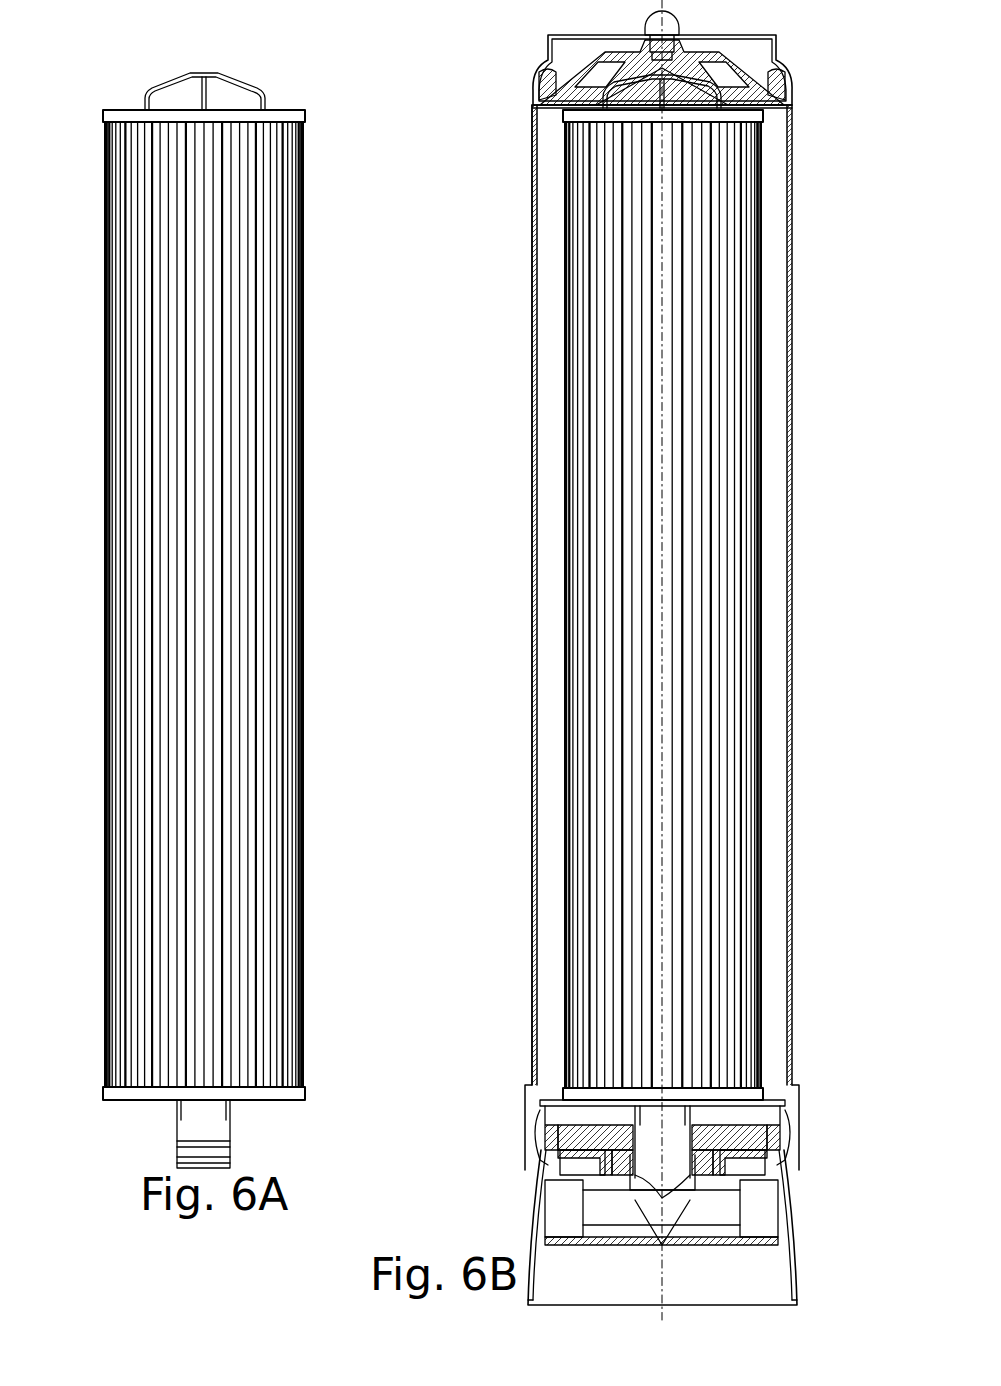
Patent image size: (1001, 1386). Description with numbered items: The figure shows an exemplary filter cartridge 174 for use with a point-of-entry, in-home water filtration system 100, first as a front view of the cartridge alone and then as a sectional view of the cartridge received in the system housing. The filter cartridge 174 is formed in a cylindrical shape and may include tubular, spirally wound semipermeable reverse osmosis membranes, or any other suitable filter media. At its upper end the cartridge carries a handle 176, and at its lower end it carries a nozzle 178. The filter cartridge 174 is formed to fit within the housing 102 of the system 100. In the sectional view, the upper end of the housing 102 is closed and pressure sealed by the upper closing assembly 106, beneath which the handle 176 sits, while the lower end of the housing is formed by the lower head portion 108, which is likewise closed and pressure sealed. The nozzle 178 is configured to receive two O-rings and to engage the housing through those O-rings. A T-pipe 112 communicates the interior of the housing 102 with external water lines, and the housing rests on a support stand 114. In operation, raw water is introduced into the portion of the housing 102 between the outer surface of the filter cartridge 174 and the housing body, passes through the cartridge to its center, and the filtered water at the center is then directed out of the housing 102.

In FIG. 6B, the water filtration system 100 is at (520, 62).
In FIG. 6B, the housing 102 is at (533, 190).
In FIG. 6B, the upper closing assembly 106 is at (753, 30).
In FIG. 6B, the lower head portion 108 is at (541, 1170).
In FIG. 6B, the T-pipe 112 is at (631, 1246).
In FIG. 6B, the support stand 114 is at (768, 1278).
In FIG. 6A, the filter cartridge 174 is at (96, 258).
In FIG. 6B, the filter cartridge 174 is at (605, 288).
In FIG. 6A, the handle 176 is at (172, 82).
In FIG. 6B, the handle 176 is at (757, 128).
In FIG. 6A, the nozzle 178 is at (200, 1125).
In FIG. 6B, the nozzle 178 is at (670, 1163).